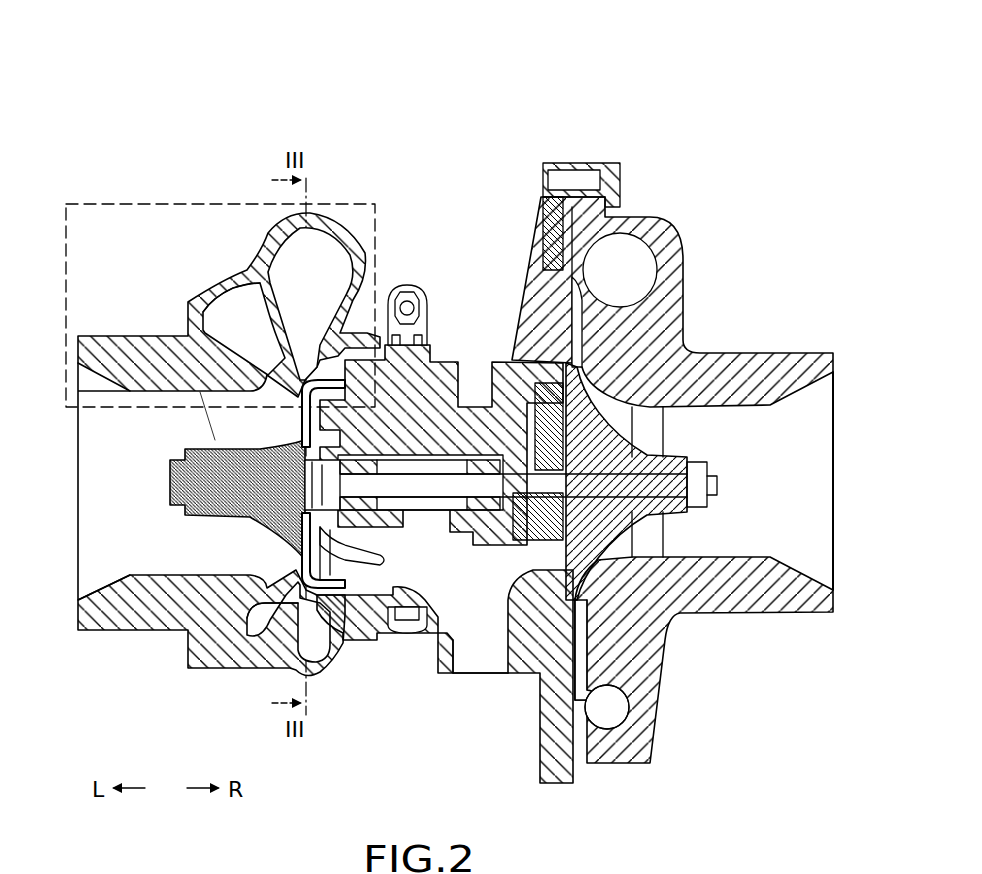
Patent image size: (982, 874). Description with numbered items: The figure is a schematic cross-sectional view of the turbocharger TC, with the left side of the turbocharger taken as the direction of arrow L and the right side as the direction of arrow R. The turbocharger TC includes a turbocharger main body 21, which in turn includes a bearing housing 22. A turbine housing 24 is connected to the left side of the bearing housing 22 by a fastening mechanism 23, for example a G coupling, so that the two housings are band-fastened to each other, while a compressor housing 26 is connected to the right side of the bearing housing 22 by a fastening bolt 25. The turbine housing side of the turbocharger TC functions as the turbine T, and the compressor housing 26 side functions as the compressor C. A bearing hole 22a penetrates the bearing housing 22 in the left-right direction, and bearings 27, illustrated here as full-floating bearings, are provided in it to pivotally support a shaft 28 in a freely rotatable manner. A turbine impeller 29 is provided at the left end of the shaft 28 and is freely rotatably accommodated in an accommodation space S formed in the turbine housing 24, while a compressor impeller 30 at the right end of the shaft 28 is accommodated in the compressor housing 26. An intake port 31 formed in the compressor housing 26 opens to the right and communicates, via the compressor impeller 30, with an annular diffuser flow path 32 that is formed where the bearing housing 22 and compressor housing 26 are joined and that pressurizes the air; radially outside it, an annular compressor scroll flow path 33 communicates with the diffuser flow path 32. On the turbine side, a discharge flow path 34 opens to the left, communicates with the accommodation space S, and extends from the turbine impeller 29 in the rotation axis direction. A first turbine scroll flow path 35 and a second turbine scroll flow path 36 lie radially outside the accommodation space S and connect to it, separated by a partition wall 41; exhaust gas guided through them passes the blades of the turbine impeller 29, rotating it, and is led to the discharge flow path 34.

The turbocharger TC is at (325, 55).
The turbocharger main body 21 is at (393, 110).
The turbine T is at (112, 155).
The compressor C is at (727, 158).
The bearing housing 22 is at (540, 216).
The bearing hole 22a is at (430, 512).
The fastening mechanism 23 is at (416, 286).
The turbine housing 24 is at (122, 630).
The fastening bolt 25 is at (616, 160).
The compressor housing 26 is at (683, 300).
The bearings 27 is at (476, 450).
The shaft 28 is at (432, 497).
The turbine impeller 29 is at (200, 445).
The compressor impeller 30 is at (663, 442).
The intake port 31 is at (833, 455).
The diffuser flow path 32 is at (583, 660).
The compressor scroll flow path 33 is at (625, 705).
The discharge flow path 34 is at (155, 572).
The first turbine scroll flow path 35 is at (317, 650).
The second turbine scroll flow path 36 is at (250, 612).
The partition wall 41 is at (297, 627).
The accommodation space S is at (236, 444).